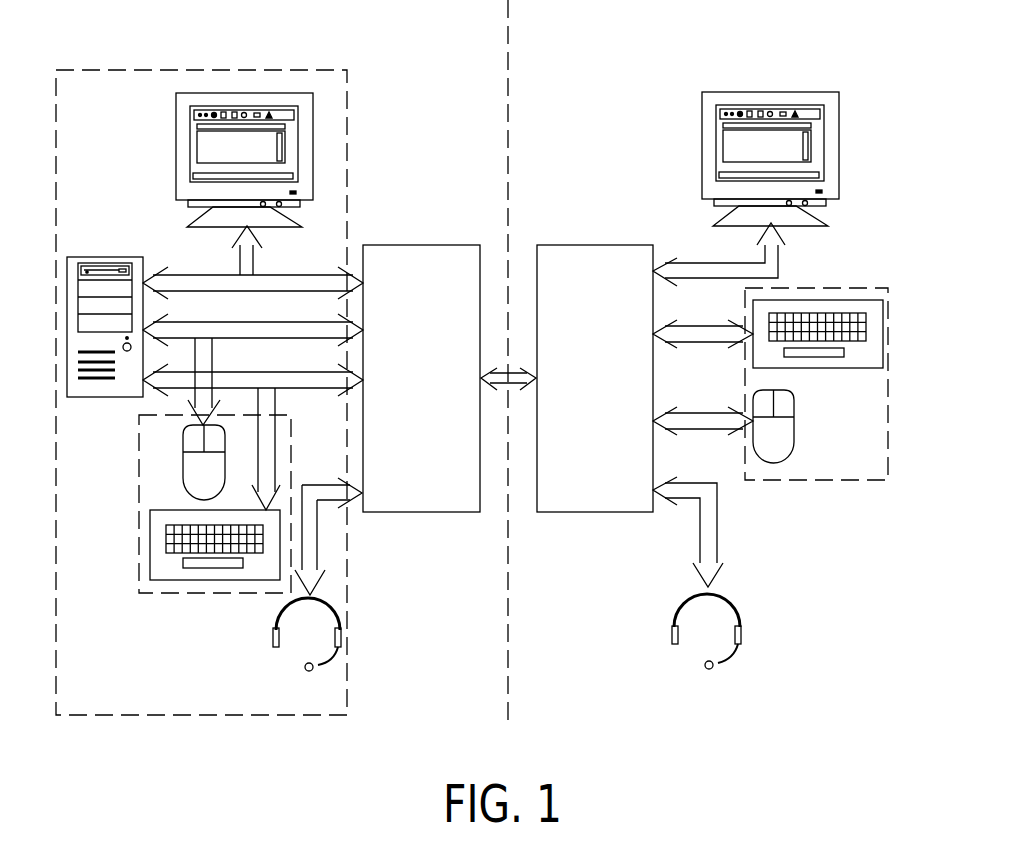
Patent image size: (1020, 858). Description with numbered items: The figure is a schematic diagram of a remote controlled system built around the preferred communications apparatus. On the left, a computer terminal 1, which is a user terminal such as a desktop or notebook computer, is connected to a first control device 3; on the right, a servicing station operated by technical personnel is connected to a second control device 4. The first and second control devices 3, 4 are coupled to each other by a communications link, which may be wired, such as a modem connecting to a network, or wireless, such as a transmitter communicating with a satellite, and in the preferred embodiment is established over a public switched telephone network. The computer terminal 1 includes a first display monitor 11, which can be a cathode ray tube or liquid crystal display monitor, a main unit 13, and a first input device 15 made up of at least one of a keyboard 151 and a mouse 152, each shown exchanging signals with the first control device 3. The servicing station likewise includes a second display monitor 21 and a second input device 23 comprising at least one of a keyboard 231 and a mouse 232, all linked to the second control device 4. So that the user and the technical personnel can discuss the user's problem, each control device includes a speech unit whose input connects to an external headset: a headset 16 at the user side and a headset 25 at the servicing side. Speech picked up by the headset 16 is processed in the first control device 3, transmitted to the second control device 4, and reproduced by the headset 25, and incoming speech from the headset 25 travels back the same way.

The computer terminal 1 is at (90, 70).
The first display monitor 11 is at (176, 153).
The main unit 13 is at (110, 257).
The first input device 15 is at (139, 563).
The keyboard 151 is at (182, 520).
The mouse 152 is at (195, 468).
The headset 16 is at (272, 628).
The first control device 3 is at (445, 250).
The second control device 4 is at (573, 253).
The second display monitor 21 is at (832, 158).
The second input device 23 is at (867, 290).
The keyboard 231 is at (832, 357).
The mouse 232 is at (782, 442).
The headset 25 is at (742, 638).